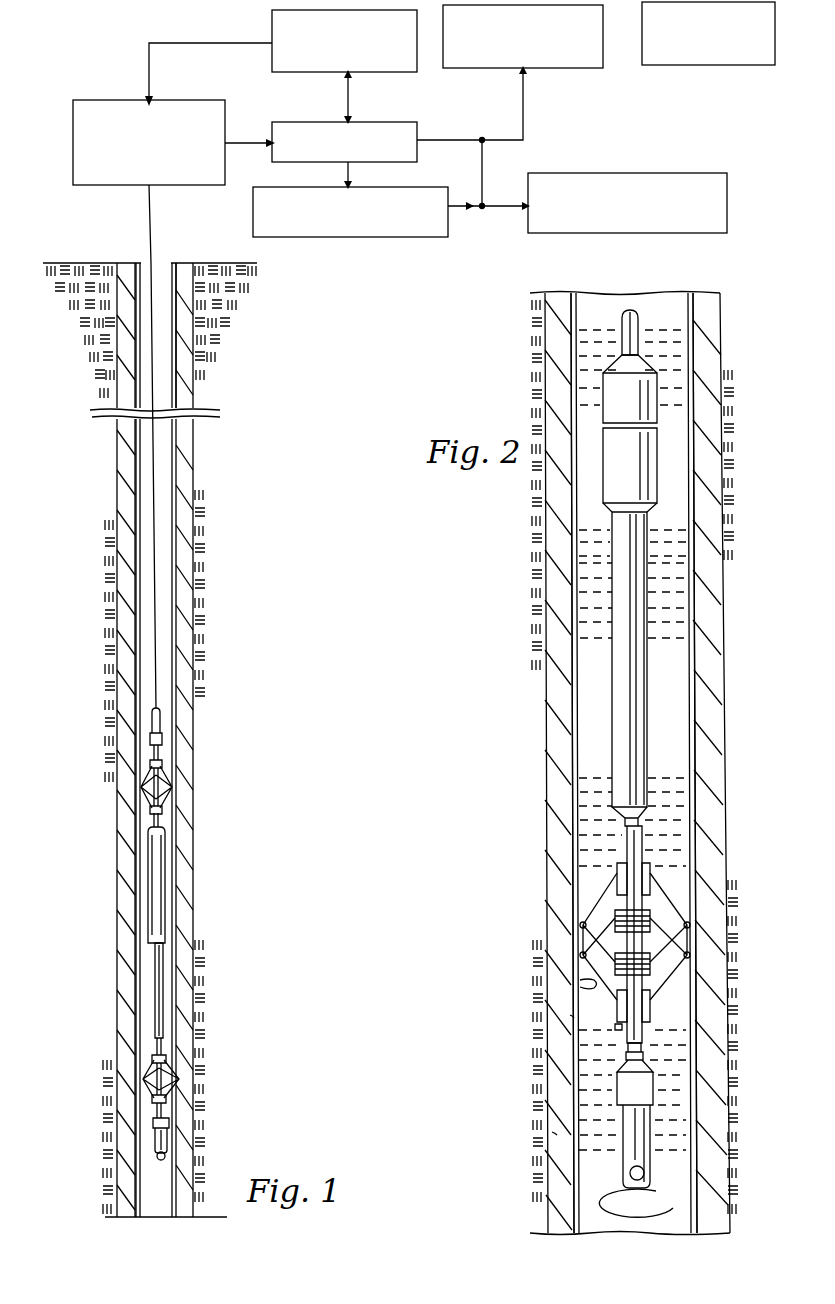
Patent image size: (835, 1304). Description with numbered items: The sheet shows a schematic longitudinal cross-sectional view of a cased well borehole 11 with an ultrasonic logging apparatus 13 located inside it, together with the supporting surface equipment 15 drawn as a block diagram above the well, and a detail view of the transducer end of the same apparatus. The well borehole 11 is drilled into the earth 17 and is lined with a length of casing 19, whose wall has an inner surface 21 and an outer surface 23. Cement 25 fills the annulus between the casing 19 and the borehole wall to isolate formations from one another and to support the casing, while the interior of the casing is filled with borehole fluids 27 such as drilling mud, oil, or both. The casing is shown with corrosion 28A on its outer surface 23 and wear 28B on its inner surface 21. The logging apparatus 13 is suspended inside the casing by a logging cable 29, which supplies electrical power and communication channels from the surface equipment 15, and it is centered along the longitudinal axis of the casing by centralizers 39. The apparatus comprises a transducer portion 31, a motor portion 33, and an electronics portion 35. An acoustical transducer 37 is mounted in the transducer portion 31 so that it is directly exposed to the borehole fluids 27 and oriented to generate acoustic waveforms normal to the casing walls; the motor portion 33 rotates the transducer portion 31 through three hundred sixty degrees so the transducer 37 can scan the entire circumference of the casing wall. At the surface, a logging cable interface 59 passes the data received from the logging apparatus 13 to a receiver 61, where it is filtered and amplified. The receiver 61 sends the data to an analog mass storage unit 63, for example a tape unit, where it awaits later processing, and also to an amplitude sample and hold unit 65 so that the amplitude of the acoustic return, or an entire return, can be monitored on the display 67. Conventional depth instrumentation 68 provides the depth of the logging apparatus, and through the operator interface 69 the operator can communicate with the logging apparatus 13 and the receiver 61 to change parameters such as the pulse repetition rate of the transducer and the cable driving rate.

In FIG. 1, the well borehole 11 is at (92, 532).
In FIG. 2, the well borehole 11 is at (520, 760).
In FIG. 1, the logging apparatus 13 is at (165, 934).
In FIG. 2, the logging apparatus 13 is at (677, 749).
In FIG. 1, the surface equipment 15 is at (483, 240).
In FIG. 1, the earth 17 is at (102, 263).
In FIG. 1, the casing 19 is at (183, 1022).
In FIG. 2, the casing 19 is at (572, 845).
In FIG. 2, the inner surface 21 is at (592, 985).
In FIG. 2, the outer surface 23 is at (570, 1017).
In FIG. 1, the cement 25 is at (190, 634).
In FIG. 2, the cement 25 is at (553, 675).
In FIG. 2, the borehole fluids 27 is at (593, 590).
In FIG. 2, the corrosion 28A is at (557, 1135).
In FIG. 2, the wear 28B is at (557, 1212).
In FIG. 1, the logging cable 29 is at (153, 455).
In FIG. 1, the transducer portion 31 is at (167, 1140).
In FIG. 2, the transducer portion 31 is at (635, 1148).
In FIG. 1, the motor portion 33 is at (155, 1005).
In FIG. 2, the motor portion 33 is at (630, 668).
In FIG. 1, the electronics portion 35 is at (155, 883).
In FIG. 2, the electronics portion 35 is at (635, 480).
In FIG. 1, the acoustical transducer 37 is at (155, 1155).
In FIG. 2, the acoustical transducer 37 is at (642, 1175).
In FIG. 1, the centralizers 39 is at (137, 767).
In FIG. 2, the centralizers 39 is at (673, 905).
In FIG. 1, the logging cable interface 59 is at (129, 100).
In FIG. 1, the receiver 61 is at (405, 122).
In FIG. 1, the analog mass storage unit 63 is at (622, 173).
In FIG. 1, the amplitude sample and hold unit 65 is at (543, 68).
In FIG. 1, the display 67 is at (693, 65).
In FIG. 1, the depth instrumentation 68 is at (330, 237).
In FIG. 1, the operator interface 69 is at (306, 72).